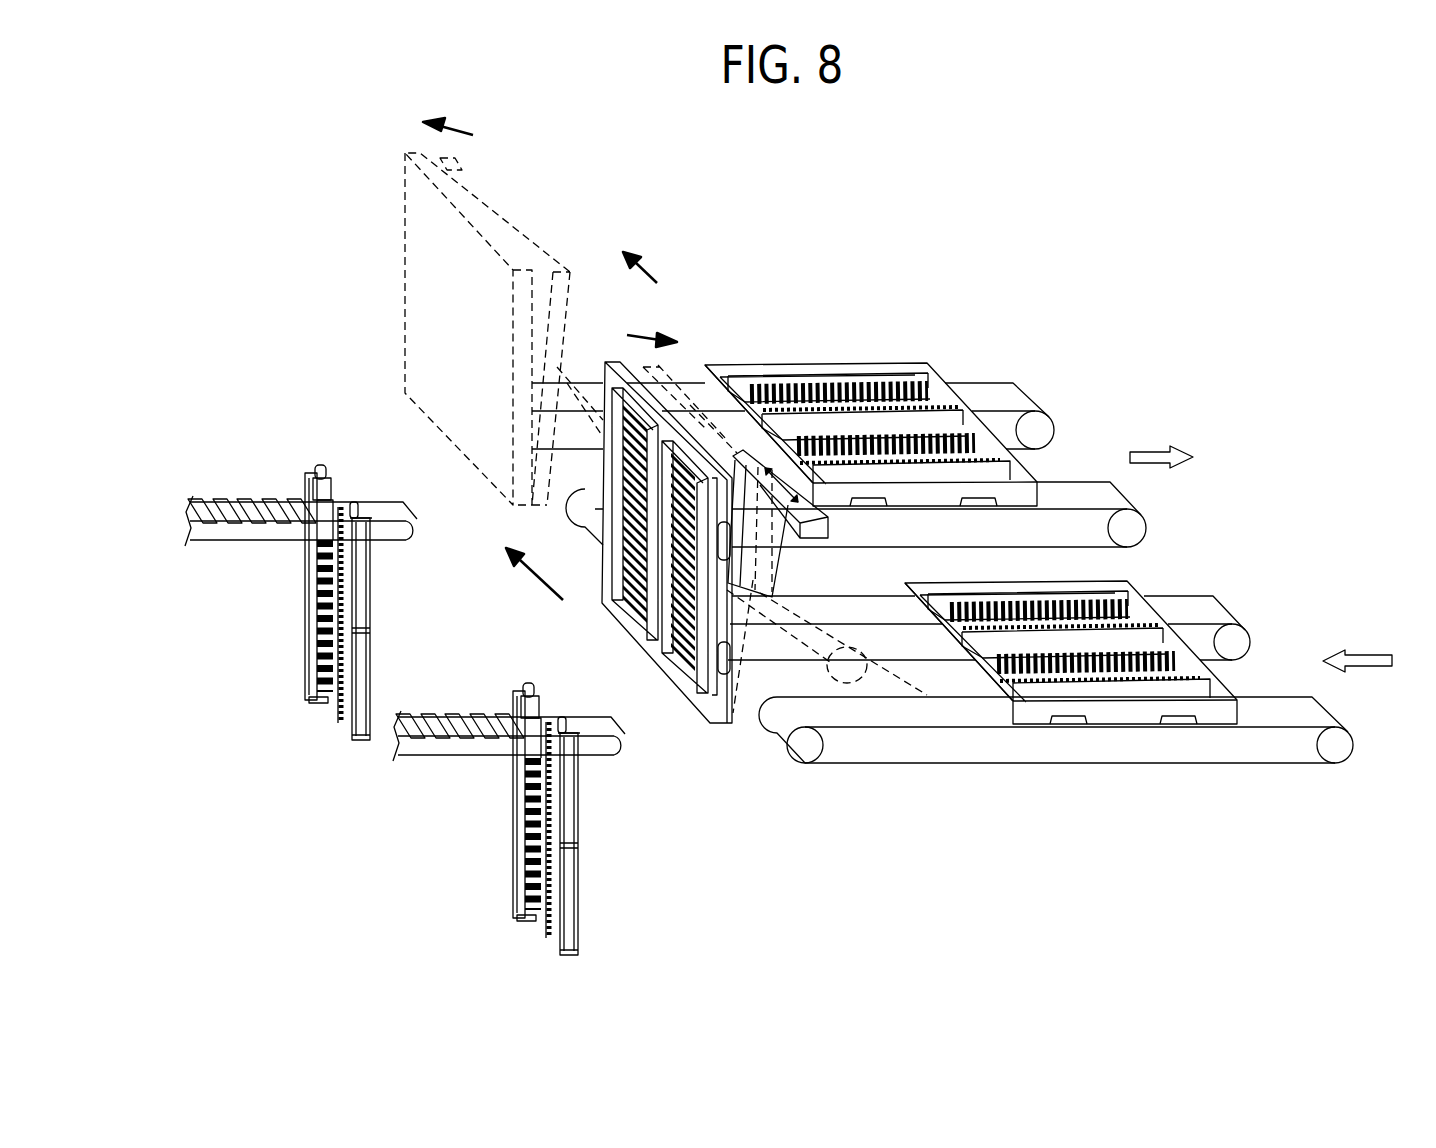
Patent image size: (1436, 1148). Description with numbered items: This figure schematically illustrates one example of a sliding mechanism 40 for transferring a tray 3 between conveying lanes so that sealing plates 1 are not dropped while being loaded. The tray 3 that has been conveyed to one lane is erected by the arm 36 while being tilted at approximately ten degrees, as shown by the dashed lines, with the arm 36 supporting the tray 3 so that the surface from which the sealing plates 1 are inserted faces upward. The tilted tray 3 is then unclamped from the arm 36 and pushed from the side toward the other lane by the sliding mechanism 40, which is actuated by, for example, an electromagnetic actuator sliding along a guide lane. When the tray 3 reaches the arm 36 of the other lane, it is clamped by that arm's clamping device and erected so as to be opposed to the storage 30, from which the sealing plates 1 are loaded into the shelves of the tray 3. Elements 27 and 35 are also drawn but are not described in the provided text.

The sealing plate 1 is at (247, 500).
The tray 3 is at (405, 262).
The holding bar 27 is at (407, 538).
The storage 30 is at (599, 864).
The conveyor 35 is at (1000, 390).
The arm 36 is at (560, 372).
The sliding mechanism 40 is at (822, 544).